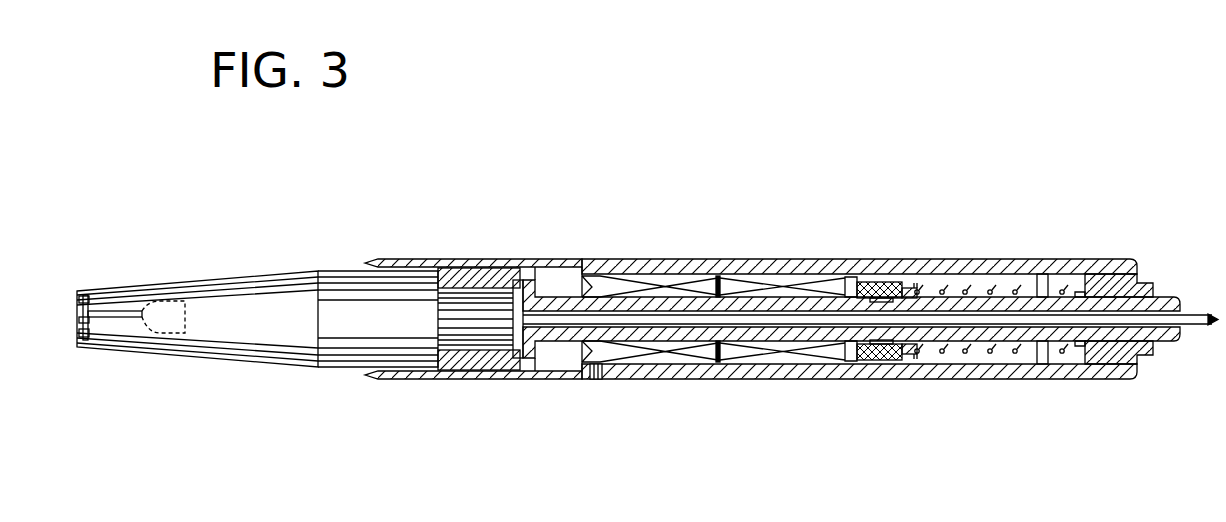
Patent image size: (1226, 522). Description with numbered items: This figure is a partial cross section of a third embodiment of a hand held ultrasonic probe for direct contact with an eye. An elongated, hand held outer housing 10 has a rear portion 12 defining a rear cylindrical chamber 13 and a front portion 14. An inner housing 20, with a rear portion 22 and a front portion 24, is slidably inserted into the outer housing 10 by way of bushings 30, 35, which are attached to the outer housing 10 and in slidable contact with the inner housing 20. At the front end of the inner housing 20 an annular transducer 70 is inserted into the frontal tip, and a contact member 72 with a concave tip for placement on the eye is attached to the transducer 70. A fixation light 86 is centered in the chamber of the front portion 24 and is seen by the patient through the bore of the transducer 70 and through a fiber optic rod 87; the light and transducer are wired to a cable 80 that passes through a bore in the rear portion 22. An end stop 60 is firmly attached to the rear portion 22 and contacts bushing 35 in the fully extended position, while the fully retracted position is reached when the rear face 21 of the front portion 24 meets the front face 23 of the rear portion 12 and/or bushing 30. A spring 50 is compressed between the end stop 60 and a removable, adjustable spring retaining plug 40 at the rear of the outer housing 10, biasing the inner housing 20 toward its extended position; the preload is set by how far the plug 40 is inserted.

The outer housing 10 is at (743, 268).
The rear portion of outer housing 12 is at (1133, 422).
The rear cylindrical chamber 13 is at (957, 355).
The front portion of outer housing 14 is at (580, 422).
The inner housing 20 is at (497, 372).
The rear face of inner housing front portion 21 is at (542, 280).
The rear portion of inner housing 22 is at (813, 303).
The front face of outer housing rear portion 23 is at (577, 280).
The front portion of inner housing 24 is at (490, 277).
The bushing 30 is at (655, 285).
The bushing 35 is at (843, 352).
The spring retaining plug 40 is at (1153, 288).
The spring 50 is at (987, 353).
The end stop 60 is at (898, 287).
The transducer 70 is at (90, 297).
The contact member 72 is at (77, 328).
The cable 80 is at (1193, 320).
The fixation light 86 is at (168, 316).
The fiber optic rod 87 is at (126, 313).